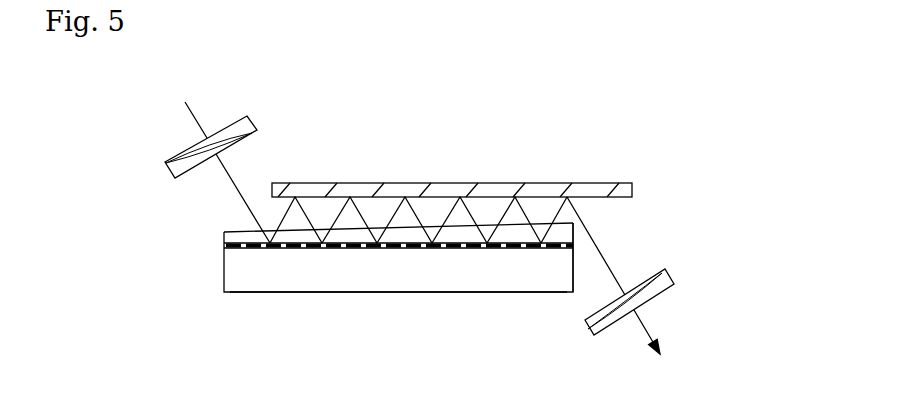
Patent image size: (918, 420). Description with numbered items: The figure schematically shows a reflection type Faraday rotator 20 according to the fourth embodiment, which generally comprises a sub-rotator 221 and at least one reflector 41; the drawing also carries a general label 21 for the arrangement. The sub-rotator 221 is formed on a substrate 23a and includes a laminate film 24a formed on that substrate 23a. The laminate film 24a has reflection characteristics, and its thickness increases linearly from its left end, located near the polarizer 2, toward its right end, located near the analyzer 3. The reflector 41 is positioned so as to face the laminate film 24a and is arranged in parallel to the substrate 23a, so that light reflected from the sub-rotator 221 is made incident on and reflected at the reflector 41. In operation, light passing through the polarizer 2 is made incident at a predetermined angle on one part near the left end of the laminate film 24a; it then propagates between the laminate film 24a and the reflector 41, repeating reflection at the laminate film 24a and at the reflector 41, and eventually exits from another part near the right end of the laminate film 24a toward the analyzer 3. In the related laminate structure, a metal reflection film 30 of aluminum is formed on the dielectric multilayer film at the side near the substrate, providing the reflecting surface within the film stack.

The polarizer 2 is at (156, 172).
The analyzer 3 is at (685, 275).
The reflector 41 is at (528, 191).
The reflection type Faraday rotator 20 is at (607, 153).
The sensor chip 21 is at (693, 148).
The laminate film 24a is at (208, 228).
The substrate 23a is at (237, 277).
The sub-rotator 221 is at (281, 297).
The metal reflection film 30 is at (573, 247).